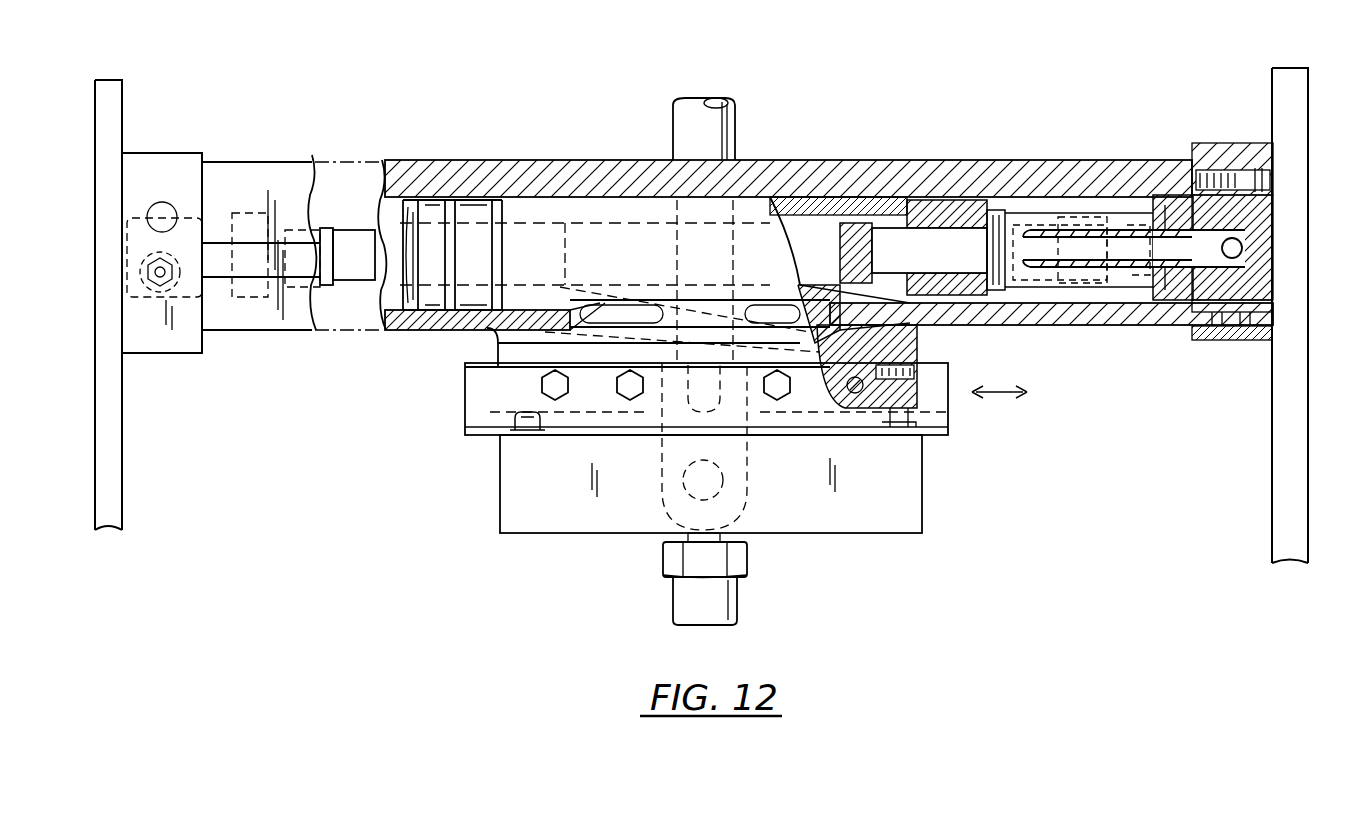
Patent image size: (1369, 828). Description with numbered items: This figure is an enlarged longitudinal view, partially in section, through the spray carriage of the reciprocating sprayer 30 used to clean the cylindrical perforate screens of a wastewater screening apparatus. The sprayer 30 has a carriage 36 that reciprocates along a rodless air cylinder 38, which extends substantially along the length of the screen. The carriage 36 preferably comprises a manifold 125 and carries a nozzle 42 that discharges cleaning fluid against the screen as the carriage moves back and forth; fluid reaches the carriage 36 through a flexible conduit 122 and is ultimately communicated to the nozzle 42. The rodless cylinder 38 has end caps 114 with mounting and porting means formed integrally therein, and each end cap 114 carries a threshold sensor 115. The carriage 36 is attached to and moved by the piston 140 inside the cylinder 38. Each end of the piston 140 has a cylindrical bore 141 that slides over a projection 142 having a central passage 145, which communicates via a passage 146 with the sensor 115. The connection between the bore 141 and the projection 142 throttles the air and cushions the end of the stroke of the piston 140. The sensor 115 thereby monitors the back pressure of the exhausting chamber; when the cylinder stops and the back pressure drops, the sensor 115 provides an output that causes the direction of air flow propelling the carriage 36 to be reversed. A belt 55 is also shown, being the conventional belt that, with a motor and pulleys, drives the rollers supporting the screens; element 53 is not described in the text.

The reciprocating sprayer 30 is at (455, 503).
The carriage 36 is at (465, 417).
The rodless air cylinder 38 is at (374, 158).
The nozzle 42 is at (740, 608).
The right wall 53 is at (1308, 195).
The belt 55 is at (123, 87).
The end cap 114 is at (200, 113).
The threshold sensor 115 is at (353, 280).
The flexible conduit 122 is at (735, 137).
The manifold 125 is at (922, 510).
The piston 140 is at (528, 215).
The cylindrical bore 141 is at (933, 237).
The projection 142 is at (1088, 225).
The central passage 145 is at (1140, 262).
The passage 146 is at (1243, 248).